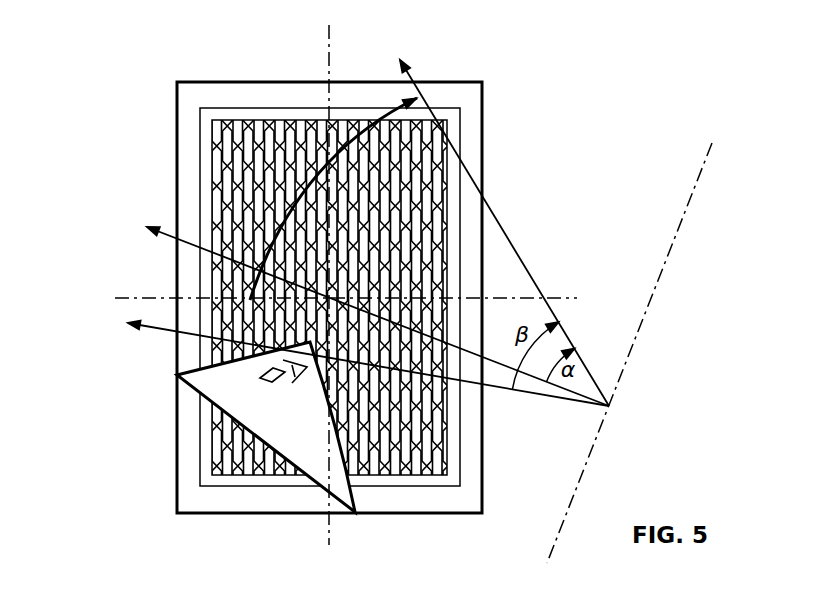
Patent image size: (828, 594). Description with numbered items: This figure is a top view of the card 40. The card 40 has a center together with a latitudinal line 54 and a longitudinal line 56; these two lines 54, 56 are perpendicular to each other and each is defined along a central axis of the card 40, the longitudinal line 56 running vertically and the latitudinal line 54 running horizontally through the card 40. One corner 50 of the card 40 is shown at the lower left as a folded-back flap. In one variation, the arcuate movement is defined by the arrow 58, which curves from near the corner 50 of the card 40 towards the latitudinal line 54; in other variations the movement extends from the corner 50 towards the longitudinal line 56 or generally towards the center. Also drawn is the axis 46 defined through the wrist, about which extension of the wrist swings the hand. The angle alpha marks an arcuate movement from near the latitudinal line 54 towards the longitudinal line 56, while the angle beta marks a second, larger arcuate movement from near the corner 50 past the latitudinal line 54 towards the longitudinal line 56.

The card 40 is at (450, 93).
The axis 46 is at (683, 215).
The corner 50 is at (305, 390).
The latitudinal line 54 is at (117, 298).
The longitudinal line 56 is at (328, 48).
The arrow 58 is at (402, 105).